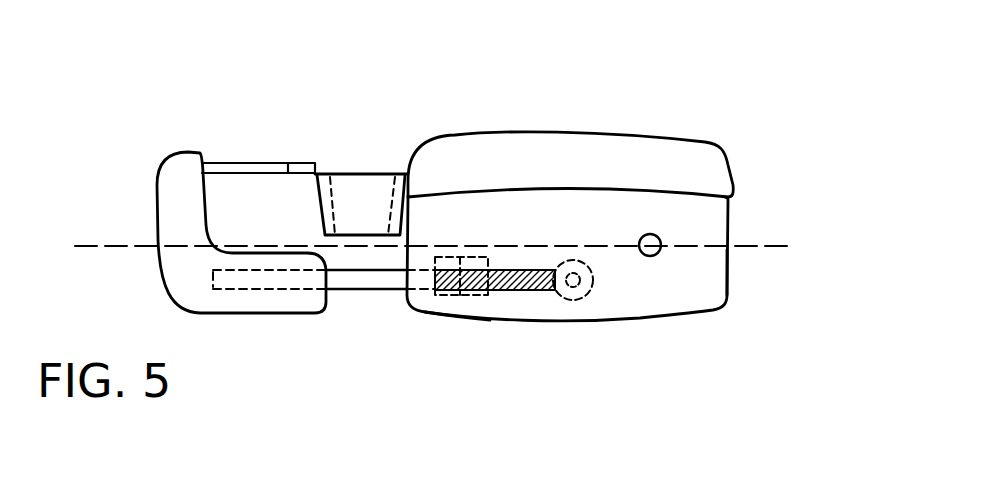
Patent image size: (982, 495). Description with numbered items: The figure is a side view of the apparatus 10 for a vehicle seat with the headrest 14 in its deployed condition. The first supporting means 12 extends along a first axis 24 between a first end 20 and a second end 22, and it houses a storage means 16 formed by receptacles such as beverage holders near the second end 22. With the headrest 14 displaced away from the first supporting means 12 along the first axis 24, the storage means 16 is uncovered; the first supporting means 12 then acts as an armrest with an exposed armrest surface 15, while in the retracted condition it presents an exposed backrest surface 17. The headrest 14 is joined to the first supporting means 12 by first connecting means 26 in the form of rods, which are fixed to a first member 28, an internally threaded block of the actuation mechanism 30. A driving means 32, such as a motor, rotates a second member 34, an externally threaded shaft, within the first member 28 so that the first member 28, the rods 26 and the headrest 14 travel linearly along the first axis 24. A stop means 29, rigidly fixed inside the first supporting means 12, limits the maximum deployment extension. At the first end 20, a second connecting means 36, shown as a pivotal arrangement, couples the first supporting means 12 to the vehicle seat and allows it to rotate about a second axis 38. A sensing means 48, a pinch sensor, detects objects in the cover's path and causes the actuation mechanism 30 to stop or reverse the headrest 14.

The apparatus 10 is at (343, 137).
The first supporting means 12 is at (597, 152).
The headrest 14 is at (173, 167).
The armrest surface 15 is at (553, 130).
The storage means 16 is at (375, 178).
The backrest surface 17 is at (453, 315).
The first end 20 is at (697, 300).
The second end 22 is at (325, 177).
The first axis 24 is at (117, 247).
The first connecting means 26 is at (370, 288).
The first member 28 is at (473, 262).
The stop means 29 is at (435, 295).
The actuation mechanism 30 is at (525, 300).
The driving means 32 is at (580, 300).
The second member 34 is at (507, 282).
The second connecting means 36 is at (651, 244).
The second axis 38 is at (651, 246).
The sensing means 48 is at (303, 165).